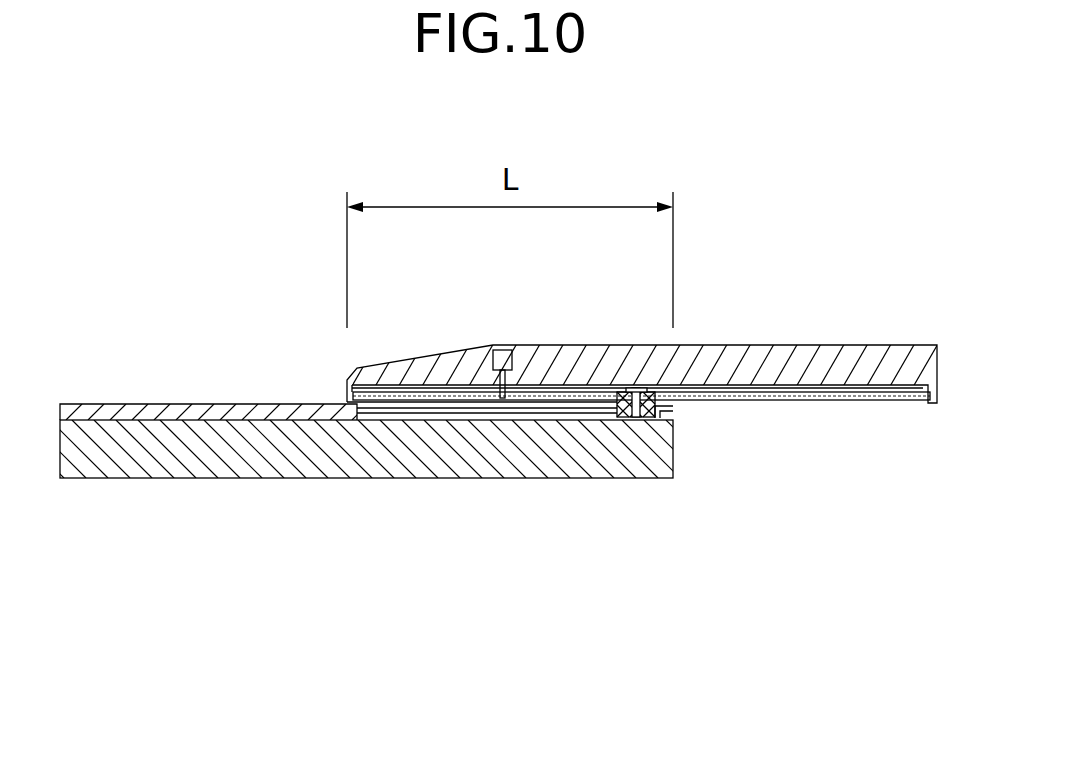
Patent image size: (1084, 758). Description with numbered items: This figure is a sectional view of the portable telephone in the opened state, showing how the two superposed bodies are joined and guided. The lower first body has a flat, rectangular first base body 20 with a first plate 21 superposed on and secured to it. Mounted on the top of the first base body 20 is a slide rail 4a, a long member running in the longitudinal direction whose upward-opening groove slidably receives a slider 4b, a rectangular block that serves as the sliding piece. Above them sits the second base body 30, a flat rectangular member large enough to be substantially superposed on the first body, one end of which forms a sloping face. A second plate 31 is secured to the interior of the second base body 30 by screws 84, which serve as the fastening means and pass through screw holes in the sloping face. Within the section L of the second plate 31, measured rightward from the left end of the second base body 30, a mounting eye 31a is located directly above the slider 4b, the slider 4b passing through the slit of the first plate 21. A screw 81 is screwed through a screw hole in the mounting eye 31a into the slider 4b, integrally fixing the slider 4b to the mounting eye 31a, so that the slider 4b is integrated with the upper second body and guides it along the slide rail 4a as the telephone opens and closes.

The first base body 20 is at (445, 468).
The first plate 21 is at (150, 403).
The second base body 30 is at (858, 358).
The second plate 31 is at (834, 402).
The mounting eye 31a is at (667, 382).
The slide rail 4a is at (555, 408).
The slider 4b is at (655, 420).
The screw 81 is at (636, 387).
The screw 84 is at (503, 350).